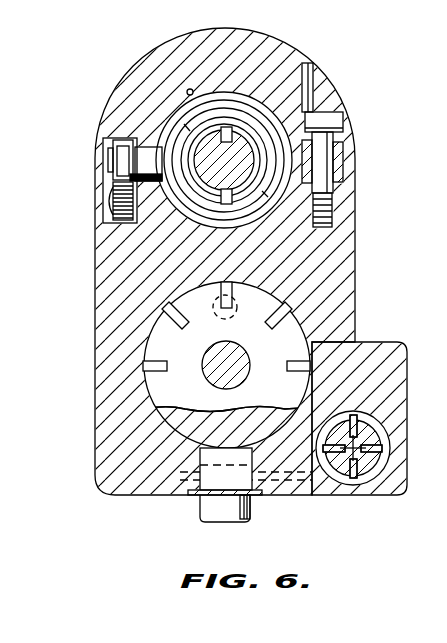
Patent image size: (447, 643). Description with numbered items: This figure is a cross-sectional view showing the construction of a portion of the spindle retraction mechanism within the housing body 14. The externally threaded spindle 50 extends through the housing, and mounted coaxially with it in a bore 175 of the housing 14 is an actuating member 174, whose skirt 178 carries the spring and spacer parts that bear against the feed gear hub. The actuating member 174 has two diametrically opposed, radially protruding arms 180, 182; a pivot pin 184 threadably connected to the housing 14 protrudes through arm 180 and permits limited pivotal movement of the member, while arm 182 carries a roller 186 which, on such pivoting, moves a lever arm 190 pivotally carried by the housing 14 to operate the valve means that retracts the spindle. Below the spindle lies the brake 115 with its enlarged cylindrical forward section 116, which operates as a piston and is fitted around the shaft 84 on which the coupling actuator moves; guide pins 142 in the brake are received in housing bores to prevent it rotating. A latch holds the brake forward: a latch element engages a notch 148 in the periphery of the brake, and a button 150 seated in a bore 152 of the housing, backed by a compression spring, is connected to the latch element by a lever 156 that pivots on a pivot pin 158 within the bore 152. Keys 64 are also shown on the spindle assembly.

The housing body 14 is at (106, 300).
The spindle 50 is at (205, 153).
The keys 64 is at (230, 126).
The shaft 84 is at (218, 358).
The brake 115 is at (137, 397).
The enlarged cylindrical forward section 116 is at (146, 338).
The guide pins 142 is at (233, 309).
The notch 148 is at (228, 448).
The button 150 is at (250, 516).
The bore 152 is at (252, 498).
The lever 156 is at (213, 487).
The pivot pin 158 is at (182, 470).
The actuating member 174 is at (172, 100).
The bore 175 is at (188, 89).
The skirt 178 is at (303, 100).
The arm 180 is at (345, 166).
The arm 182 is at (135, 170).
The pivot pin 184 is at (325, 121).
The roller 186 is at (118, 152).
The lever arm 190 is at (113, 192).